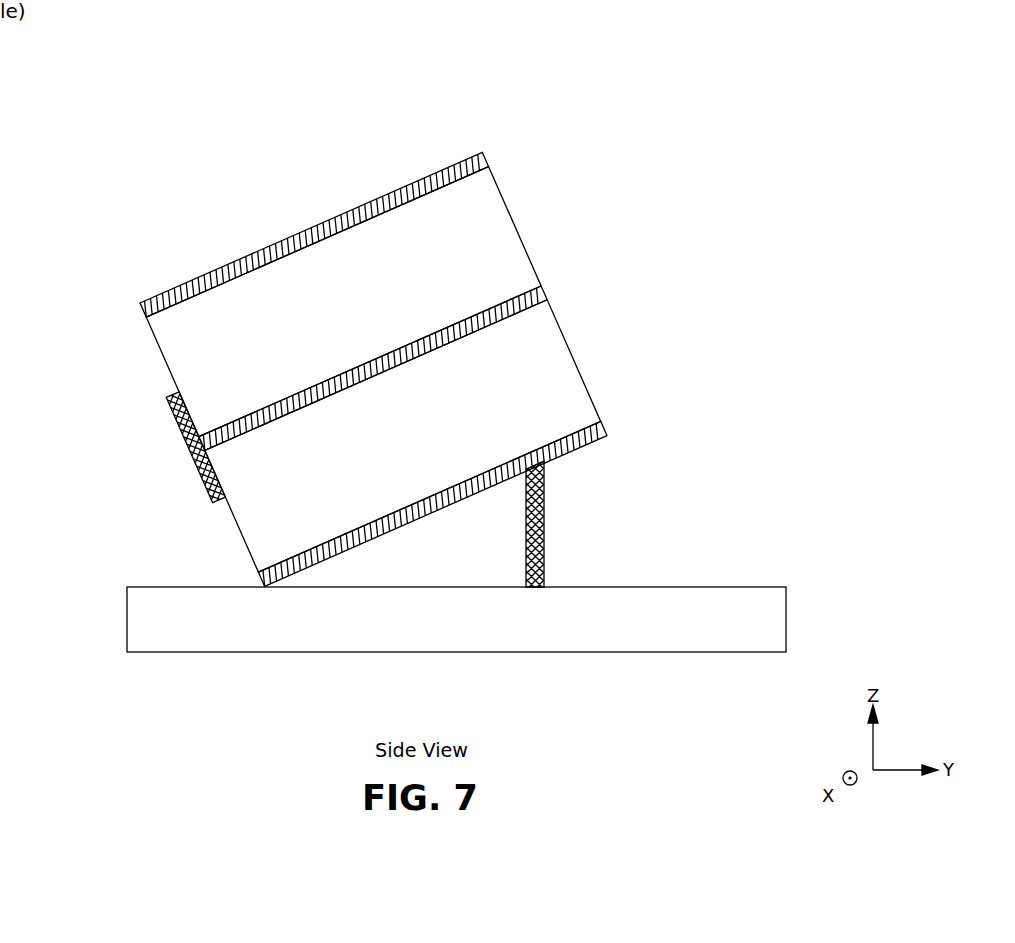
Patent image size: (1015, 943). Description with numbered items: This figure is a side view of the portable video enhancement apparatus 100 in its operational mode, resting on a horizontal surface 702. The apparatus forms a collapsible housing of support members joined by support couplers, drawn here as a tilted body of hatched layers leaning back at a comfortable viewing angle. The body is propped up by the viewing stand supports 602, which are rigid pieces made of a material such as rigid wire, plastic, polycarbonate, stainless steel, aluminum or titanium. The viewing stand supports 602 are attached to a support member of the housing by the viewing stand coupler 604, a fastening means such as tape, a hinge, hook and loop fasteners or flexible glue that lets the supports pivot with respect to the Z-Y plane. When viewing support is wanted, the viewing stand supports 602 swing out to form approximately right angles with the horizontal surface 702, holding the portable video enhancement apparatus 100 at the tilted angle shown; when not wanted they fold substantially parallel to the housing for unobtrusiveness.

The portable video enhancement apparatus 100 is at (892, 57).
The viewing stand support 602 is at (535, 546).
The viewing stand coupler 604 is at (545, 468).
The horizontal surface 702 is at (162, 622).